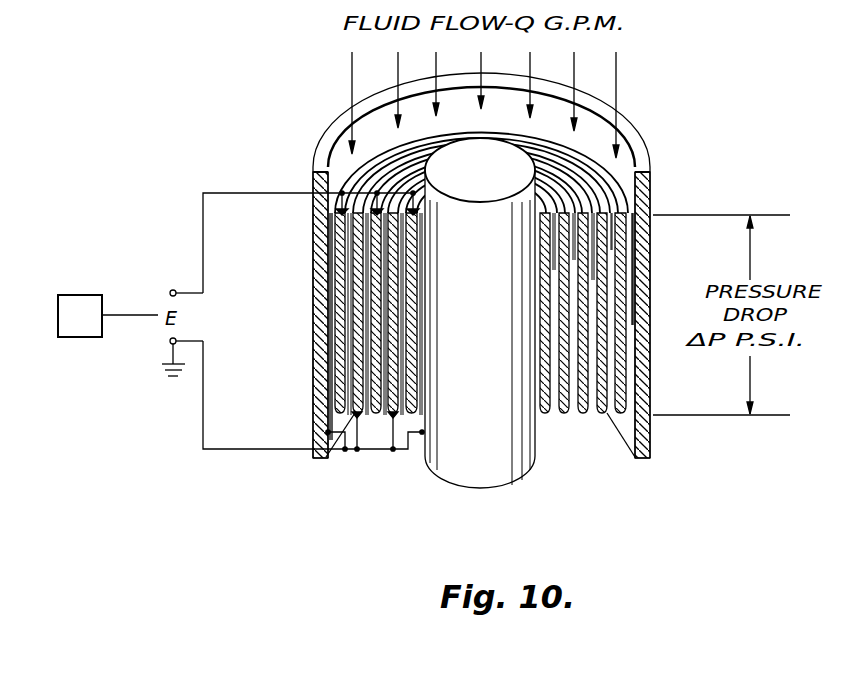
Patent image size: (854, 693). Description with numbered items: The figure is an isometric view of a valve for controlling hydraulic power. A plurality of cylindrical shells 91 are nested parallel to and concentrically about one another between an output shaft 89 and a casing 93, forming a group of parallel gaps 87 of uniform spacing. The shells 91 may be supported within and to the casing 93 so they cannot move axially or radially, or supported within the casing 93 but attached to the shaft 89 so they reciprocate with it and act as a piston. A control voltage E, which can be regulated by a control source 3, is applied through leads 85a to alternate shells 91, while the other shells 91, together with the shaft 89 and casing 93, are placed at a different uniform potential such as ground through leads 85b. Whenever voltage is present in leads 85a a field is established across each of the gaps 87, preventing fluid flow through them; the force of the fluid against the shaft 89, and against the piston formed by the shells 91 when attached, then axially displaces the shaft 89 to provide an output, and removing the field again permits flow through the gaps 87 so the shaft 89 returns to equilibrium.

The control source 3 is at (80, 316).
The leads 85a is at (203, 242).
The leads 85b is at (203, 414).
The parallel gaps 87 is at (595, 415).
The output shaft 89 is at (480, 478).
The cylindrical shells 91 is at (377, 413).
The casing 93 is at (657, 139).